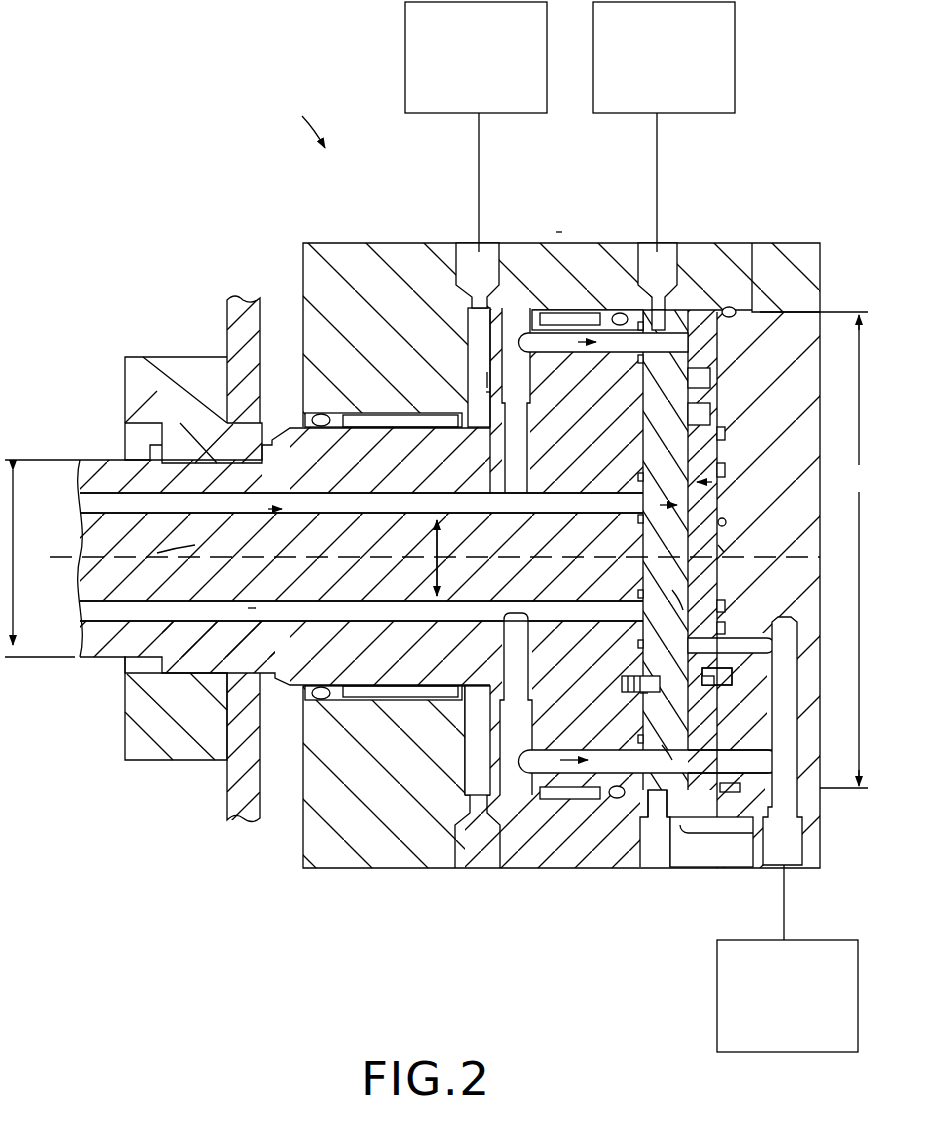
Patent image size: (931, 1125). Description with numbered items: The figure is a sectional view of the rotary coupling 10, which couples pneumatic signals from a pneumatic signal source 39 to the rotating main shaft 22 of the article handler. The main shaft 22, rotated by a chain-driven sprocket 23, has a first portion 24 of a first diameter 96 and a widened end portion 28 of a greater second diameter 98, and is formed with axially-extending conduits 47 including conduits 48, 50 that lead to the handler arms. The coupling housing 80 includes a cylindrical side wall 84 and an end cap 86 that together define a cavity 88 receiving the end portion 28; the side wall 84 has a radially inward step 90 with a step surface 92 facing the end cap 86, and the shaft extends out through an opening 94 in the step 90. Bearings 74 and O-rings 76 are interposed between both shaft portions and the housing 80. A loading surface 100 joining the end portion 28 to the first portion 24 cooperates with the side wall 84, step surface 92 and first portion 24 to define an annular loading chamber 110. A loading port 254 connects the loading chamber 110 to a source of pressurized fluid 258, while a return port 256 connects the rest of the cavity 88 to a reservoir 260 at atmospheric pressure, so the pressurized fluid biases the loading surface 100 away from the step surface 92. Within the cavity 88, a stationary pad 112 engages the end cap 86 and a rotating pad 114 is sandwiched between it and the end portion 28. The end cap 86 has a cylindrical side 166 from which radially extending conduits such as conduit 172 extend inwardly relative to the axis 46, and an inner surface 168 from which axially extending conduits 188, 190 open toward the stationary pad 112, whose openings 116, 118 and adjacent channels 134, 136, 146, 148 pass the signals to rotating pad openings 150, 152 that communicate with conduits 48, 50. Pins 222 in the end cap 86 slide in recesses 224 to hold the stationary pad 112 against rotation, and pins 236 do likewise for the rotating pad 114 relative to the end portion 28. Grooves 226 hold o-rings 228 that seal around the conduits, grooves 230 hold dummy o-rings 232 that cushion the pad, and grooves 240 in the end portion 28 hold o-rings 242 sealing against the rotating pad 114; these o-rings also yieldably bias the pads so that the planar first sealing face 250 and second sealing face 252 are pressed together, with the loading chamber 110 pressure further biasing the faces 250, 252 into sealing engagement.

The rotary coupling 10 is at (301, 120).
The main shaft 22 is at (103, 433).
The chain-driven sprocket 23 is at (245, 330).
The first portion 24 is at (118, 650).
The end portion 28 is at (603, 541).
The pneumatic signal source 39 is at (800, 1052).
The axis 46 is at (185, 537).
The axially-extending conduits 47 is at (252, 612).
The conduit 48 is at (588, 347).
The conduit 50 is at (308, 622).
The bearings 74 is at (585, 313).
The O-rings 76 is at (620, 313).
The housing 80 is at (557, 210).
The cylindrical side wall 84 is at (592, 243).
The end cap 86 is at (805, 540).
The cavity 88 is at (560, 325).
The step 90 is at (330, 352).
The step surface 92 is at (488, 378).
The opening 94 is at (397, 686).
The first diameter 96 is at (40, 558).
The second diameter 98 is at (814, 550).
The loading surface 100 is at (489, 395).
The annular loading chamber 110 is at (472, 330).
The stationary pad 112 is at (722, 549).
The rotating pad 114 is at (657, 467).
The stationary pad opening 116 is at (711, 842).
The stationary pad opening 118 is at (721, 600).
The channel 134 is at (652, 805).
The channel 136 is at (668, 589).
The channel 146 is at (708, 410).
The channel 148 is at (698, 366).
The rotating pad opening 150 is at (662, 330).
The rotating pad opening 152 is at (668, 748).
The cylindrical side 166 is at (790, 243).
The inner surface 168 is at (725, 522).
The radially extending conduit 172 is at (798, 850).
The axially extending conduit 188 is at (742, 755).
The axially extending conduit 190 is at (745, 640).
The pins 222 is at (703, 680).
The recesses 224 is at (645, 694).
The grooves 226 is at (740, 612).
The o-rings 228 is at (700, 672).
The grooves 230 is at (722, 465).
The o-rings 232 is at (722, 432).
The pins 236 is at (622, 682).
The grooves 240 is at (657, 358).
The o-rings 242 is at (640, 360).
The first sealing face 250 is at (665, 505).
The second sealing face 252 is at (708, 482).
The loading port 254 is at (461, 243).
The return port 256 is at (672, 243).
The source of pressurized fluid 258 is at (405, 55).
The reservoir 260 is at (736, 50).